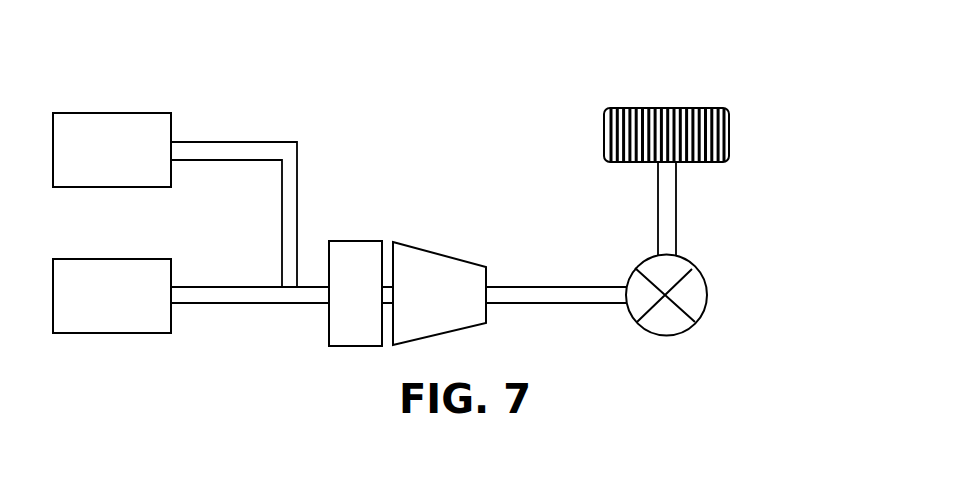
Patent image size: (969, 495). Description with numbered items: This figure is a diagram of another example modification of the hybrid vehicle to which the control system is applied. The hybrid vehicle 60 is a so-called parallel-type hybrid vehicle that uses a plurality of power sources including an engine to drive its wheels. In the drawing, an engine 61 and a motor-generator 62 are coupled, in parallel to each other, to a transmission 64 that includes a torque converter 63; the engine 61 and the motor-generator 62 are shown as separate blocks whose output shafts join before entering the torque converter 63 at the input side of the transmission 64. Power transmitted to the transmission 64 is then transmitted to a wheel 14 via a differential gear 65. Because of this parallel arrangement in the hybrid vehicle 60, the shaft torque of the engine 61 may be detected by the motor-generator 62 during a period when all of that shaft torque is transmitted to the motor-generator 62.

The hybrid vehicle 60 is at (435, 102).
The engine 61 is at (108, 259).
The motor-generator 62 is at (97, 113).
The torque converter 63 is at (352, 241).
The transmission 64 is at (433, 252).
The differential gear 65 is at (708, 287).
The wheel 14 is at (692, 108).